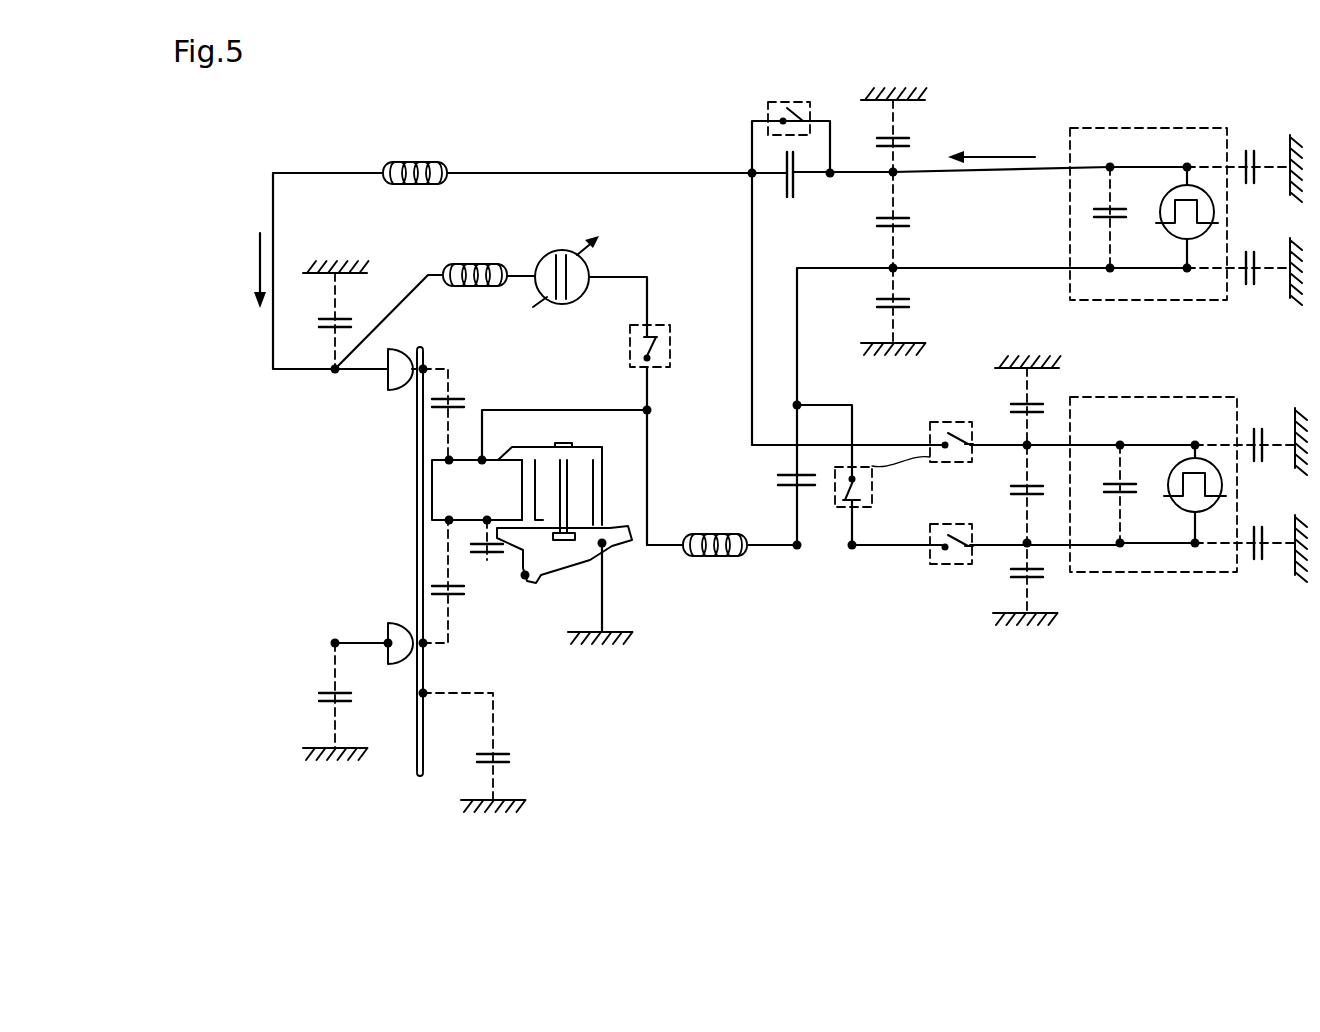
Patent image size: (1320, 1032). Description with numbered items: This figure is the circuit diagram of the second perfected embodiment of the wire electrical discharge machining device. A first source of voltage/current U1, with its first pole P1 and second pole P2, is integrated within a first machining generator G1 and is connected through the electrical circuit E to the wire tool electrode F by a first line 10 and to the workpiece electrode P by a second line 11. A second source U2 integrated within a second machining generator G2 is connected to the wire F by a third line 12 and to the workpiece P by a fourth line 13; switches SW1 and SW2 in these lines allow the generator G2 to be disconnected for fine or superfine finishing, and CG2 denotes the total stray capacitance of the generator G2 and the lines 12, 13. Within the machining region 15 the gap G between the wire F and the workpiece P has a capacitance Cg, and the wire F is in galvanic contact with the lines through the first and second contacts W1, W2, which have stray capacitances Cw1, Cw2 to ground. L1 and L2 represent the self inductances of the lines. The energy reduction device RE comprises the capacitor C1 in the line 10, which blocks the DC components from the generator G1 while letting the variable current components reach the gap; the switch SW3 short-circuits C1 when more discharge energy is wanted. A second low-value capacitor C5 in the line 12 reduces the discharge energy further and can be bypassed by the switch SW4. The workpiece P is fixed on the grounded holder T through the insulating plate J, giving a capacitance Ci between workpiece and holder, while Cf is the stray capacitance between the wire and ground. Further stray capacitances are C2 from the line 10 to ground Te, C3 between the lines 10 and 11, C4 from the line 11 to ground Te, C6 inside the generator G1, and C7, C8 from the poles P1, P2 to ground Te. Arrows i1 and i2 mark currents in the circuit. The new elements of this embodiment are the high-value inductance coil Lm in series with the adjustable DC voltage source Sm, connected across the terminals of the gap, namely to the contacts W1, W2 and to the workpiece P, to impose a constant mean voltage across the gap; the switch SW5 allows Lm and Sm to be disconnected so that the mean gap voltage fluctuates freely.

The electrical circuit E is at (531, 174).
The first line 10 is at (603, 174).
The self inductance L1 is at (415, 189).
The current i2 is at (244, 270).
The stray capacitance Cw1 is at (346, 315).
The inductance coil Lm is at (475, 254).
The adjustable DC voltage source Sm is at (566, 265).
The switch SW5 is at (621, 346).
The energy reduction device RE is at (763, 188).
The switch SW3 is at (793, 126).
The capacitor C1 is at (789, 189).
The ground Te is at (897, 92).
The stray capacitance C2 is at (914, 138).
The current i1 is at (991, 146).
The stray capacitance C3 is at (914, 222).
The stray capacitance C4 is at (914, 305).
The second line 11 is at (797, 345).
The first pole P1 is at (1185, 162).
The first machining generator G1 is at (1180, 128).
The first source of voltage/current U1 is at (1162, 204).
The internal stray capacitance C6 is at (1100, 218).
The stray capacitance C7 is at (1244, 159).
The stray capacitance C8 is at (1244, 277).
The second pole P2 is at (1187, 272).
The first contact W1 is at (402, 385).
The second contact W2 is at (379, 630).
The gap capacitance Cg is at (455, 506).
The machining region 15 is at (409, 511).
The machining gap G is at (418, 486).
The tool electrode F is at (418, 580).
The workpiece electrode P is at (477, 490).
The insulating element J is at (537, 520).
The holder T is at (565, 585).
The capacitance between workpiece electrode and holder Ci is at (493, 548).
The stray capacitance Cw2 is at (347, 701).
The stray capacitance Cf is at (485, 751).
The third line 12 is at (868, 440).
The switch SW1 is at (1022, 429).
The second capacitor C5 is at (778, 481).
The switch SW4 is at (863, 477).
The self inductance L2 is at (722, 559).
The switch SW2 is at (1022, 532).
The fourth line 13 is at (898, 548).
The second source U2 is at (1172, 473).
The stray capacitances of second generator CG2 is at (1070, 577).
The second machining generator G2 is at (1207, 572).